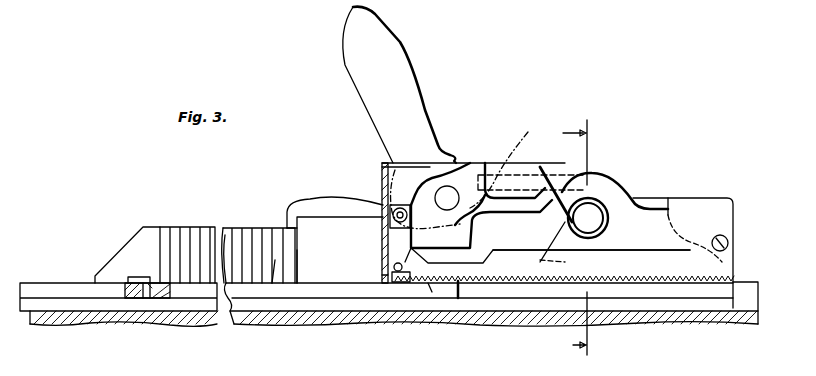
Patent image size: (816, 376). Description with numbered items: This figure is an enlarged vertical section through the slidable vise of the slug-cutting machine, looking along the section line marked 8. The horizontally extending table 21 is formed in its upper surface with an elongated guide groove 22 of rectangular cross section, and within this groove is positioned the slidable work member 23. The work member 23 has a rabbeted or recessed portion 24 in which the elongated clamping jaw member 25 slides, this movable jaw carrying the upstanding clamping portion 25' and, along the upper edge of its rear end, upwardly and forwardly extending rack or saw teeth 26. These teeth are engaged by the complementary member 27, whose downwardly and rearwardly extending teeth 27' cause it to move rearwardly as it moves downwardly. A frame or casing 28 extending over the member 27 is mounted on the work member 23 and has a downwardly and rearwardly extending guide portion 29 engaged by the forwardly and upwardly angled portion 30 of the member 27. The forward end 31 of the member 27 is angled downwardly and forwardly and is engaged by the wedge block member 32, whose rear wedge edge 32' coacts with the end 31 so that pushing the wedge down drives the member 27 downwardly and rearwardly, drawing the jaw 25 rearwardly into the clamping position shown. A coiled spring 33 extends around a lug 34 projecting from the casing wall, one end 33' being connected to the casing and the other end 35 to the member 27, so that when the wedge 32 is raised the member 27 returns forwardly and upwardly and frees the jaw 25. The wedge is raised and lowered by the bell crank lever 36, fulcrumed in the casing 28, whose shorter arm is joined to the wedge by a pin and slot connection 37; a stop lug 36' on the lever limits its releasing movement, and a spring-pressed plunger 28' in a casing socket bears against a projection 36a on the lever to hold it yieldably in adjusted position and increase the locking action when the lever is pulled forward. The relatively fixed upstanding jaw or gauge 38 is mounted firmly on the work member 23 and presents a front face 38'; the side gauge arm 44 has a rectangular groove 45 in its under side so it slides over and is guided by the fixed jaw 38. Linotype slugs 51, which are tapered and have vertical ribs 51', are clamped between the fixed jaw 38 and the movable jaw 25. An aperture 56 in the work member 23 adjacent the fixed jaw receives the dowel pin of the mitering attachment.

The section line 8- 8 is at (577, 244).
The table 21 is at (148, 320).
The guide groove 22 is at (745, 312).
The slidable work member 23 is at (292, 305).
The rabbeted or recessed portion 24 is at (475, 292).
The clamping jaw member 25 is at (114, 255).
The upstanding clamping portion 25' is at (147, 251).
The rack or saw teeth 26 is at (432, 283).
The complementary member 27 is at (591, 242).
The rack or saw teeth 27' is at (564, 270).
The frame or casing 28 is at (647, 238).
The spring-pressed plunger 28' is at (512, 164).
The guide portion 29 is at (418, 246).
The forwardly and upwardly angled portion 30 is at (432, 262).
The forward end 31 is at (402, 277).
The wedge block member 32 is at (371, 223).
The rear wedge edge 32' is at (371, 271).
The coiled spring 33 is at (591, 206).
The spring end 33' is at (550, 202).
The lug 34 is at (602, 215).
The spring end 35 is at (562, 263).
The bell crank lever 36 is at (396, 85).
The stop lug 36' is at (477, 149).
The projection 36a is at (500, 215).
The pin and slot connection 37 is at (382, 196).
The fixed upstanding jaw or gauge 38 is at (339, 233).
The front face 38' is at (307, 266).
The side gauge arm 44 is at (333, 202).
The rectangular recess or groove 45 is at (287, 228).
The linotype slugs 51 is at (227, 244).
The vertical ribs 51' is at (171, 235).
The aperture 56 is at (272, 290).